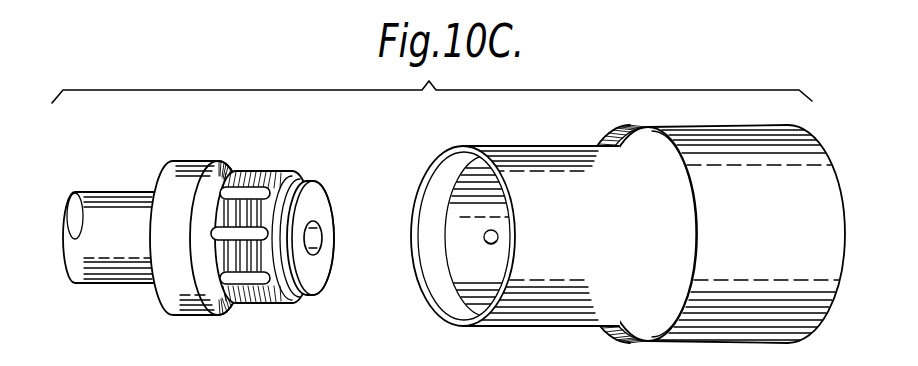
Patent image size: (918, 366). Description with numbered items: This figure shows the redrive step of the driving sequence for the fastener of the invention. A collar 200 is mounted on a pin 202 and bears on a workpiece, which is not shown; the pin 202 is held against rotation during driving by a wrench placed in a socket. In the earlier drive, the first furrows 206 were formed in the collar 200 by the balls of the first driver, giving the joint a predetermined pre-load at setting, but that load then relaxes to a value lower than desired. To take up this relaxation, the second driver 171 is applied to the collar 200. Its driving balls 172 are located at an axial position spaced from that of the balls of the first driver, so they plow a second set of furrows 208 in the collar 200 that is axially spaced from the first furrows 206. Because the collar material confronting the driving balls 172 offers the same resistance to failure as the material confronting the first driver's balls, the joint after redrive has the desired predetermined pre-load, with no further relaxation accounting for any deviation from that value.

The second driver 171 is at (563, 167).
The driving balls 172 is at (486, 239).
The collar 200 is at (200, 163).
The pin 202 is at (117, 210).
The first furrows 206 is at (255, 180).
The second set of furrows 208 is at (276, 177).